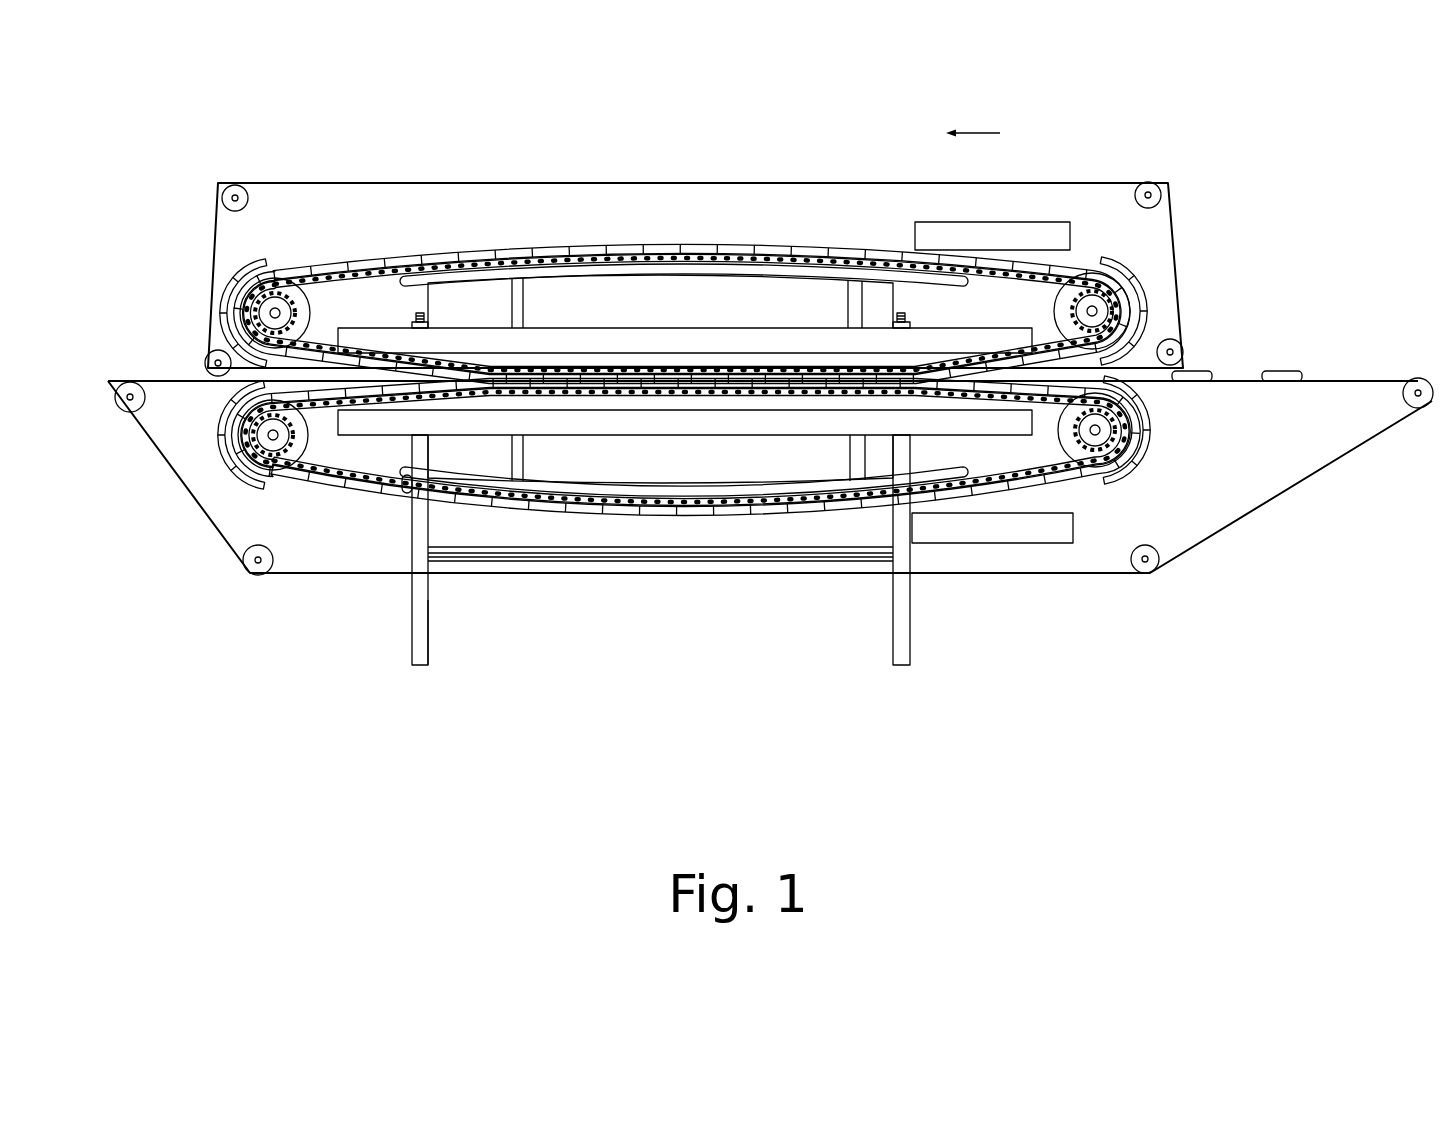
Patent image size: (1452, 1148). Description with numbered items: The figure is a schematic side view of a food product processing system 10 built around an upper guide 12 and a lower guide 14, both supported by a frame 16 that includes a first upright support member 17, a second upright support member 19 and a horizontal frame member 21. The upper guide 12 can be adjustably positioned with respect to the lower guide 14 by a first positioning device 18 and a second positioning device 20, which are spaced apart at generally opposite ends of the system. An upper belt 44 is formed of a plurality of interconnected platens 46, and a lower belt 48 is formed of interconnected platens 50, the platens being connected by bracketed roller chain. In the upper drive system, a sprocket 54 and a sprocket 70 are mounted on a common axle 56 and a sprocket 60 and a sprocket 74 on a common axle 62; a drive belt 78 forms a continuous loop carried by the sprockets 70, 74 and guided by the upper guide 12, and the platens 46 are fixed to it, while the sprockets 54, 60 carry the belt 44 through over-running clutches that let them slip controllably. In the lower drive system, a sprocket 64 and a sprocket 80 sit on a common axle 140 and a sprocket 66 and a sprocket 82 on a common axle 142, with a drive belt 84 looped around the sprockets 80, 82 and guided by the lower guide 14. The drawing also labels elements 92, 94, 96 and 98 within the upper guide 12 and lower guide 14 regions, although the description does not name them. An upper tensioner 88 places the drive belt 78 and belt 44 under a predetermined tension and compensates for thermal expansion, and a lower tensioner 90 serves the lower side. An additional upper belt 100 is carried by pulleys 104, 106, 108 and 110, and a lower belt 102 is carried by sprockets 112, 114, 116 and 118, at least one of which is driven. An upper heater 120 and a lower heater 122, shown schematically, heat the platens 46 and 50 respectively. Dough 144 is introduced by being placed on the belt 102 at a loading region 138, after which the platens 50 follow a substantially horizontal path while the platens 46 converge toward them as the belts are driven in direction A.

The food product processing system 10 is at (178, 232).
The upper guide 12 is at (685, 314).
The lower guide 14 is at (685, 447).
The frame 16 is at (433, 653).
The first upright support member 17 is at (418, 630).
The first positioning device 18 is at (433, 318).
The second upright support member 19 is at (897, 624).
The second positioning device 20 is at (913, 317).
The horizontal frame member 21 is at (702, 560).
The upper belt 44 is at (298, 258).
The platens 46 is at (497, 247).
The lower belt 48 is at (282, 491).
The platens 50 is at (580, 510).
The sprocket 54 is at (247, 288).
The axle 56 is at (268, 312).
The sprocket 60 is at (1128, 322).
The axle 62 is at (1095, 308).
The sprocket 64 is at (260, 468).
The sprocket 66 is at (1122, 407).
The sprocket 70 is at (307, 313).
The sprocket 74 is at (1067, 313).
The drive belt 78 is at (660, 252).
The sprocket 80 is at (307, 447).
The sprocket 82 is at (1083, 483).
The drive belt 84 is at (1045, 470).
The upper tensioner 88 is at (757, 268).
The lower tensioner 90 is at (795, 490).
The upper left post 92 is at (523, 312).
The upper right post 94 is at (853, 307).
The lower left post 96 is at (518, 457).
The lower right post 98 is at (857, 460).
The upper belt 100 is at (680, 183).
The lower belt 102 is at (1048, 573).
The pulley 104 is at (238, 197).
The pulley 106 is at (1150, 195).
The pulley 108 is at (1182, 352).
The pulley 110 is at (210, 362).
The sprocket 112 is at (246, 566).
The sprocket 114 is at (1147, 568).
The sprocket 116 is at (1426, 408).
The sprocket 118 is at (128, 407).
The upper heater 120 is at (993, 237).
The lower heater 122 is at (998, 530).
The loading region 138 is at (1350, 378).
The axle 140 is at (268, 434).
The axle 142 is at (1097, 430).
The dough 144 is at (1283, 370).